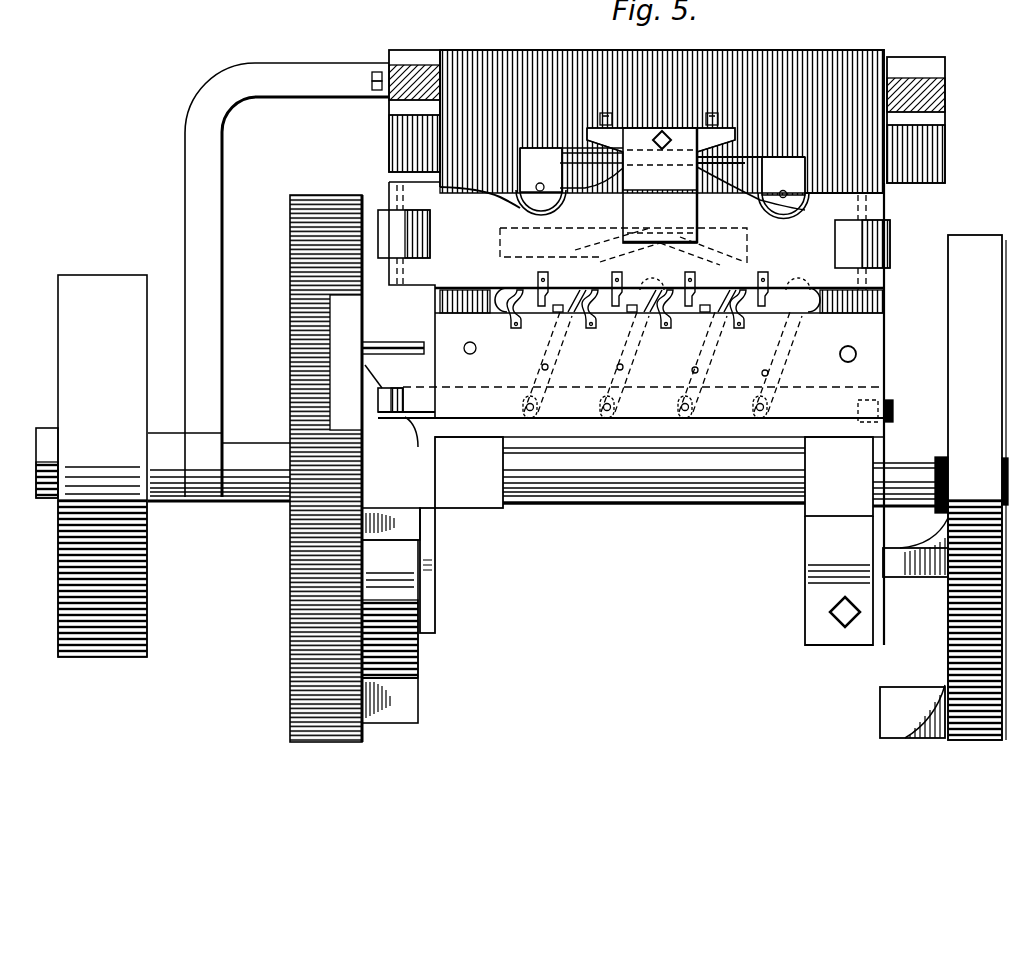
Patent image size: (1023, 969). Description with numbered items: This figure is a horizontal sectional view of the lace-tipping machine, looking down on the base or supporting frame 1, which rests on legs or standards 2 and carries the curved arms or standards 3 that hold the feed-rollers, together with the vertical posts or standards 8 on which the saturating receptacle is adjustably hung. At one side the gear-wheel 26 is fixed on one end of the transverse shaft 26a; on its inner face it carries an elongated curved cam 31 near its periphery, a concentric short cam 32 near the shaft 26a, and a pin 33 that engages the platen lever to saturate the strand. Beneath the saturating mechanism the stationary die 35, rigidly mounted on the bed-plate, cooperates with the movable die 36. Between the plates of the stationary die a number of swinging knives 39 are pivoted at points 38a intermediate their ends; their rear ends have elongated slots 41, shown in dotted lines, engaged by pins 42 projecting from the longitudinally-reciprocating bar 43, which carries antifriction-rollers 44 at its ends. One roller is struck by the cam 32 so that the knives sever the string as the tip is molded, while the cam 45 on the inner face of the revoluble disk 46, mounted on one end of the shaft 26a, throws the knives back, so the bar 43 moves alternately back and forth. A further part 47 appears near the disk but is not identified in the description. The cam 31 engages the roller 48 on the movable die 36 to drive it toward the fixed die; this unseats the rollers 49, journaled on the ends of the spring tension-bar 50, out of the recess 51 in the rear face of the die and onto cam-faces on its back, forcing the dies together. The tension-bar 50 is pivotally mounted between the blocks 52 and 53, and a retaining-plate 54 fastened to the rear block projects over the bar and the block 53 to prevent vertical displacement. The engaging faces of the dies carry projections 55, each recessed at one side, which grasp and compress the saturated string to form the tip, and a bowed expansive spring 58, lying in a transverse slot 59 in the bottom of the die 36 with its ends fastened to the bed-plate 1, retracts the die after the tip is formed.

The base or supporting frame 1 is at (664, 50).
The legs or standards 2 is at (435, 598).
The arms or standards 3 is at (378, 107).
The vertical posts or standards 8 is at (848, 370).
The gear-wheel 26 is at (295, 290).
The shaft 26a is at (665, 505).
The elongated curved cam 31 is at (410, 650).
The short cam 32 is at (405, 527).
The pin 33 is at (393, 342).
The stationary die 35 is at (665, 351).
The movable die 36 is at (630, 280).
The pivot point 38a is at (762, 368).
The swinging or pivoted knives 39 is at (540, 366).
The elongated slots 41 is at (795, 408).
The pins 42 is at (662, 365).
The longitudinally-reciprocating bar 43 is at (414, 387).
The antifriction-rollers 44 is at (378, 398).
The cam 45 is at (905, 578).
The revoluble disk 46 is at (978, 240).
The foot 47 is at (880, 700).
The roller 48 is at (430, 240).
The rollers 49 is at (560, 200).
The tension-bar 50 is at (657, 174).
The recess 51 is at (517, 206).
The block 52 is at (607, 113).
The block 53 is at (612, 178).
The retaining-plate 54 is at (662, 164).
The projections 55 is at (497, 285).
The bowed expansive spring 58 is at (623, 237).
The transverse slot 59 is at (728, 234).